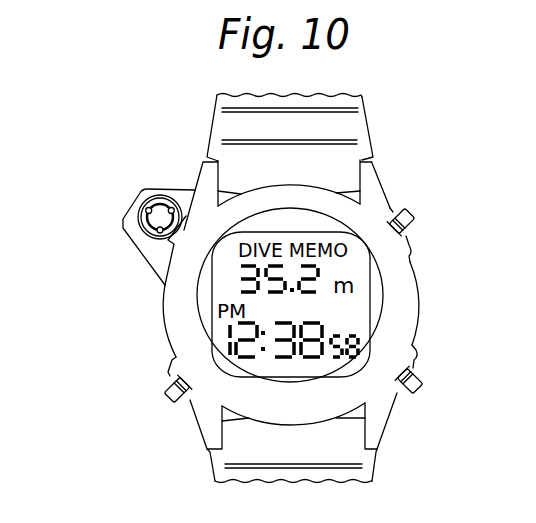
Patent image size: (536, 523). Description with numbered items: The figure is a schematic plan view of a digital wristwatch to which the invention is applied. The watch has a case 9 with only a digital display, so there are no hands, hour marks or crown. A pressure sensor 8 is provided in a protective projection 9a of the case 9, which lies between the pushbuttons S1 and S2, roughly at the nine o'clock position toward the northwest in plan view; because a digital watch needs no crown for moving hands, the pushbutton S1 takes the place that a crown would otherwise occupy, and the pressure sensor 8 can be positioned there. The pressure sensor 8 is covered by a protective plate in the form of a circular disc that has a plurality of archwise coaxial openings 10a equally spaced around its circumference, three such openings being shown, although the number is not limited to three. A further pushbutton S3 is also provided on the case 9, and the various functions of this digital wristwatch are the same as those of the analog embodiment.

The pressure sensor 8 is at (136, 231).
The case 9 is at (174, 316).
The protective projection 9a is at (162, 189).
The archwise coaxial openings 10a is at (140, 210).
The pushbutton S1 is at (420, 386).
The pushbutton S2 is at (177, 398).
The push button switch S3 is at (407, 217).